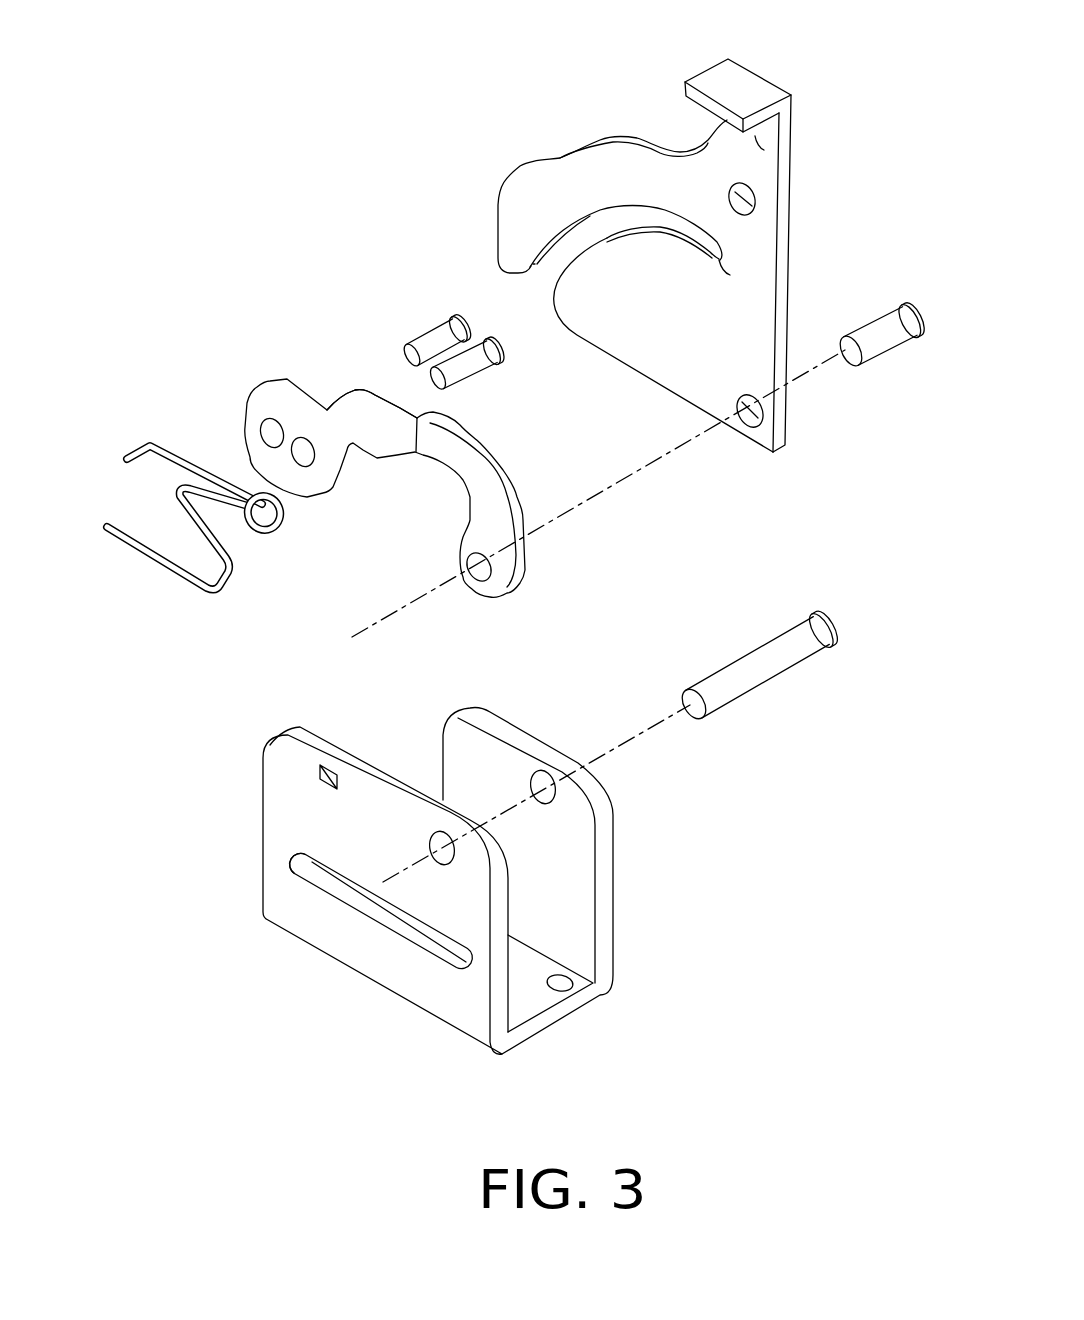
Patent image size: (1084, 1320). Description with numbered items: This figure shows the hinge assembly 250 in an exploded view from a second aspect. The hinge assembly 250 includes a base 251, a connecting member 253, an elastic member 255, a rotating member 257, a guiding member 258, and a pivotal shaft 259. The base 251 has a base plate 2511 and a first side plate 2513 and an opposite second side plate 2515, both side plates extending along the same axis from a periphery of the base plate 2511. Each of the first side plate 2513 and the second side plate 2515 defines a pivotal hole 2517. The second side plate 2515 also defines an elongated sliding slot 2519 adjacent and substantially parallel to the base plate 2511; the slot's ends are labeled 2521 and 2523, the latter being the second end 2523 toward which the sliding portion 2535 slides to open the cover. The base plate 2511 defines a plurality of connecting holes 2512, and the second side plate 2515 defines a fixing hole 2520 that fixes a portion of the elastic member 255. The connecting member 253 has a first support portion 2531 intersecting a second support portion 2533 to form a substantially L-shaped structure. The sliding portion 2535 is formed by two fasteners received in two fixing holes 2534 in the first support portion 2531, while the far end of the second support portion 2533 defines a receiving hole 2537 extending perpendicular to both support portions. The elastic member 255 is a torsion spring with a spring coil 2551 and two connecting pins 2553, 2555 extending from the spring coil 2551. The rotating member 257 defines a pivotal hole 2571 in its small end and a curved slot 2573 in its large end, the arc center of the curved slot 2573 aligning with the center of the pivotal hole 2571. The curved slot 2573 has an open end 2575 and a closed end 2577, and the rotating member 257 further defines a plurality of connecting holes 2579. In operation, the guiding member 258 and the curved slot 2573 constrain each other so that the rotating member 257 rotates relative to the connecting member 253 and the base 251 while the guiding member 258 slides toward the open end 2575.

The hinge assembly 250 is at (468, 62).
The rotating member 257 is at (805, 62).
The curved slot 2573 is at (602, 233).
The connecting holes 2579 is at (752, 189).
The closed end 2577 is at (730, 275).
The open end 2575 is at (551, 274).
The pivotal hole 2571 is at (752, 415).
The pivotal shaft 259 is at (872, 346).
The connecting member 253 is at (537, 458).
The first support portion 2531 is at (363, 403).
The second support portion 2533 is at (487, 527).
The fixing holes 2534 is at (273, 432).
The receiving hole 2537 is at (480, 563).
The sliding portion 2535 is at (437, 333).
The elastic member 255 is at (247, 584).
The spring coil 2551 is at (279, 526).
The connecting pin 2553 is at (183, 452).
The connecting pin 2555 is at (134, 548).
The guiding member 258 is at (747, 680).
The base 251 is at (640, 933).
The base plate 2511 is at (520, 1000).
The connecting holes 2512 is at (563, 987).
The first side plate 2513 is at (603, 883).
The second side plate 2515 is at (264, 760).
The pivotal hole 2517 is at (550, 798).
The sliding slot 2519 is at (387, 920).
The fixing hole 2520 is at (320, 780).
The slot end 2521 is at (300, 870).
The second end 2523 is at (463, 967).